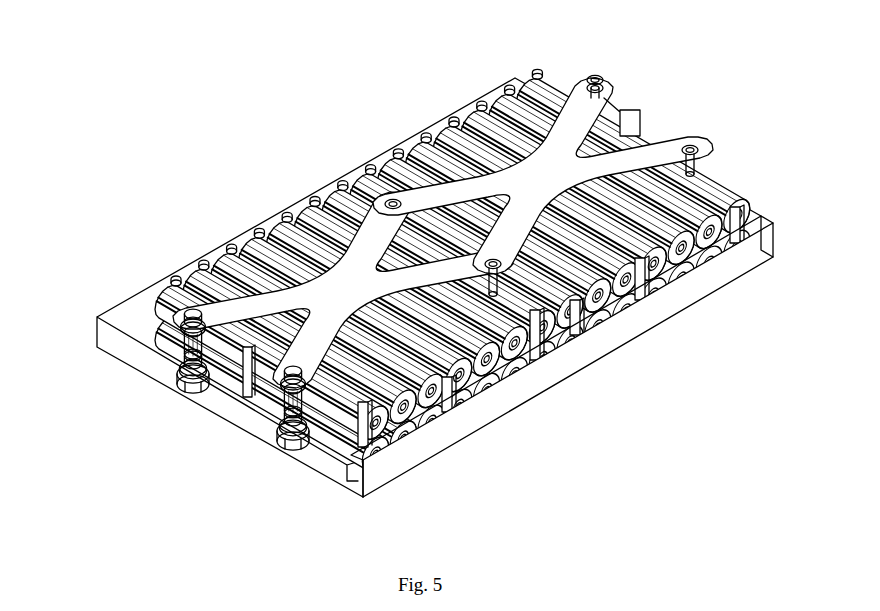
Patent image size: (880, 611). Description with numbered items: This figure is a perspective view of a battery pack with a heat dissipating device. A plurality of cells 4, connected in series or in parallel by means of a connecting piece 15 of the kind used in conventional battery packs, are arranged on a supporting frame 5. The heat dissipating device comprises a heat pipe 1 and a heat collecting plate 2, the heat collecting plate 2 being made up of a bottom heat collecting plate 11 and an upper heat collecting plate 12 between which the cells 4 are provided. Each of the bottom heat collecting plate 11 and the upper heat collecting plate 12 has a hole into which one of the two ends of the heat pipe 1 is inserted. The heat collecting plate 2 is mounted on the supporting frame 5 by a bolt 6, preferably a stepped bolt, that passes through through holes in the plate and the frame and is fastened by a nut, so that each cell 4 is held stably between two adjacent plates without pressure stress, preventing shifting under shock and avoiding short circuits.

The heat pipe 1 is at (632, 118).
The heat collecting plate 2 is at (190, 312).
The cell 4 is at (406, 427).
The supporting frame 5 is at (492, 410).
The bolt 6 is at (160, 282).
The bottom heat collecting plate 11 is at (219, 376).
The upper heat collecting plate 12 is at (268, 213).
The connecting piece 15 is at (446, 402).